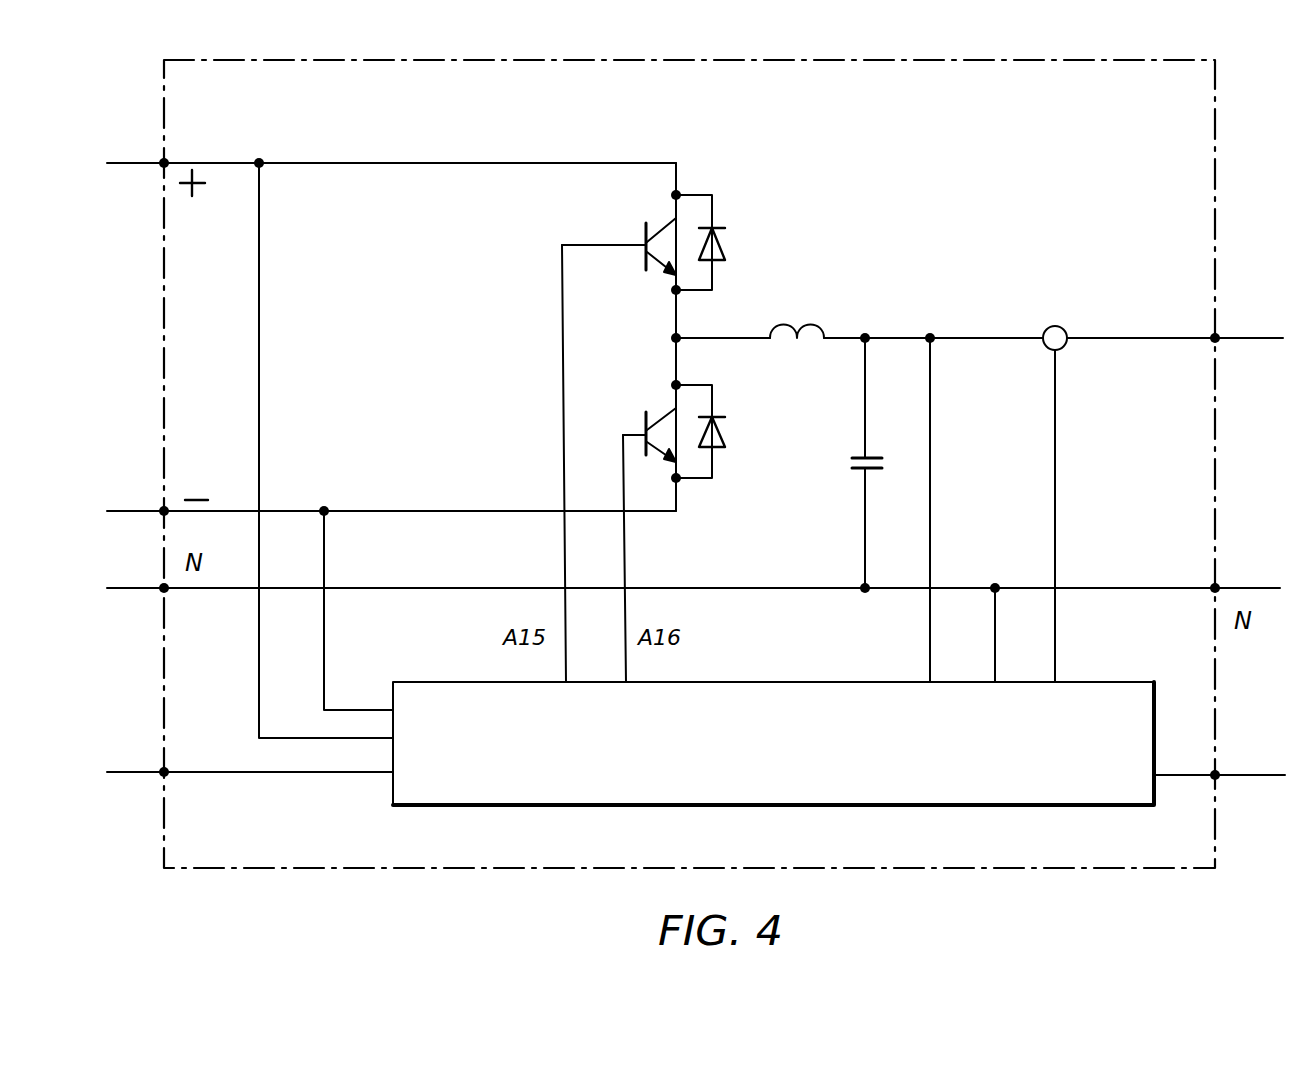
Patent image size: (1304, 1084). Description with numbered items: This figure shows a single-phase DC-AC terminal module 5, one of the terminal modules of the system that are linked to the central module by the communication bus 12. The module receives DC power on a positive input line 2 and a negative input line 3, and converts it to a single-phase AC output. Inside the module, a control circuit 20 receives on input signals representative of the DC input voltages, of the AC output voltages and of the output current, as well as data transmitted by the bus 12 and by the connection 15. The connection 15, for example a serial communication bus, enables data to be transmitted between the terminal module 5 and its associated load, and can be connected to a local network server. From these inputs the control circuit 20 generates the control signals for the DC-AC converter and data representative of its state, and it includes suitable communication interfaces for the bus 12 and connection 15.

The positive DC input terminal 2 is at (151, 165).
The negative DC input terminal 3 is at (144, 510).
The terminal module 5 is at (1216, 125).
The communication bus 12 is at (158, 774).
The connection 15 is at (1219, 770).
The control circuit 20 is at (990, 806).